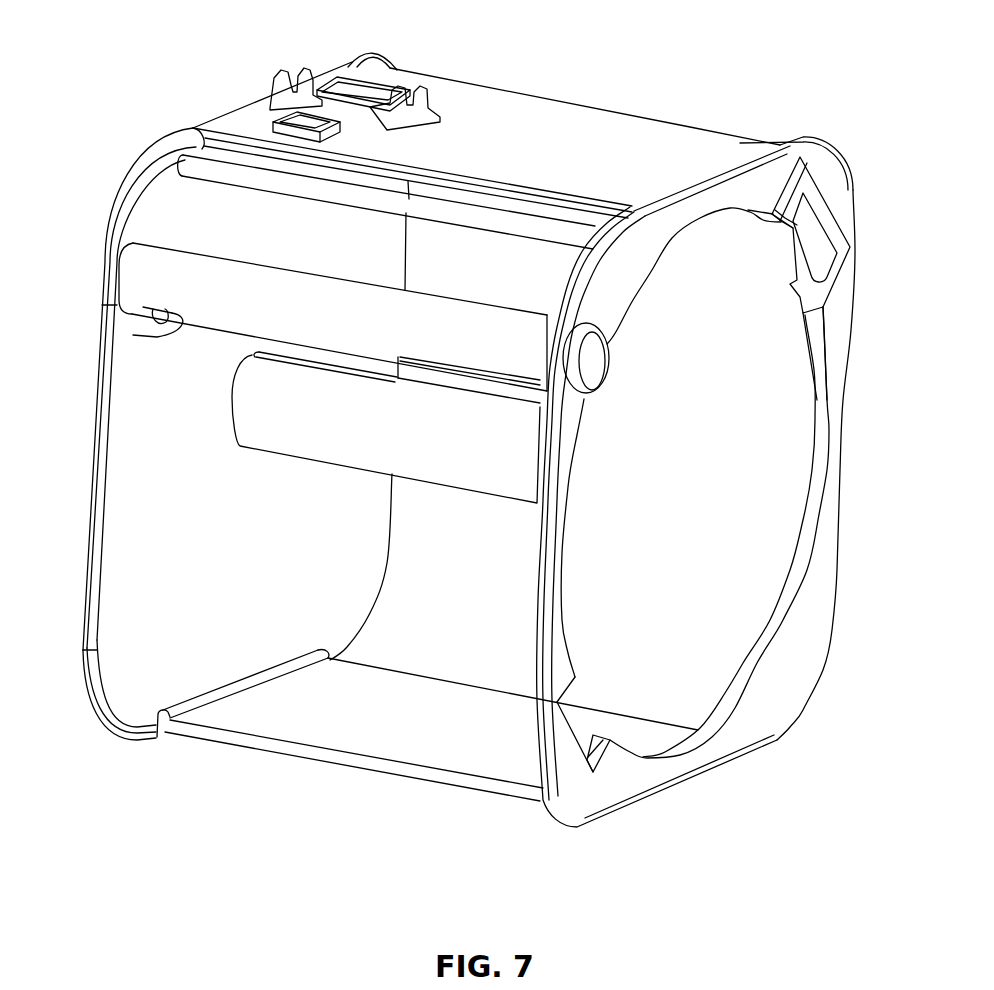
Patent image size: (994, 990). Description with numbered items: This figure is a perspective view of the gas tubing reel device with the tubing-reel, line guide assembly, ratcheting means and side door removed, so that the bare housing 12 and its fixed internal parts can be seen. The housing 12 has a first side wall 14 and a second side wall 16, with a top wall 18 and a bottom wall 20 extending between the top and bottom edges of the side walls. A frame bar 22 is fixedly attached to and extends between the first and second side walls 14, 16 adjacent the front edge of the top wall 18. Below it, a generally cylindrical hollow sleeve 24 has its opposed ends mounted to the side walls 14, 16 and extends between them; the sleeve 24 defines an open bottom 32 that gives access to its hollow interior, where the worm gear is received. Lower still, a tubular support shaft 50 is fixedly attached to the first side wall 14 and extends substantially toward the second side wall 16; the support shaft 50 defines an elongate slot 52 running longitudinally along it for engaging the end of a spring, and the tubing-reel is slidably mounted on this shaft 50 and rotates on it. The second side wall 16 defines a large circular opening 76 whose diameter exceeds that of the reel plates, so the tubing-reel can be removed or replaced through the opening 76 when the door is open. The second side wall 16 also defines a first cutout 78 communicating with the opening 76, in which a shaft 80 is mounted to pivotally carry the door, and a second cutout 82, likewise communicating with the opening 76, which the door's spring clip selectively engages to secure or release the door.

The housing 12 is at (618, 94).
The first side wall 14 is at (120, 517).
The second side wall 16 is at (800, 710).
The top wall 18 is at (567, 102).
The bottom wall 20 is at (280, 733).
The frame bar 22 is at (500, 237).
The sleeve 24 is at (270, 311).
The open bottom 32 is at (133, 335).
The tubular support shaft 50 is at (446, 483).
The elongate slot 52 is at (347, 373).
The circular opening 76 is at (753, 656).
The first cutout 78 is at (803, 195).
The shaft 80 is at (793, 247).
The second cutout 82 is at (597, 757).